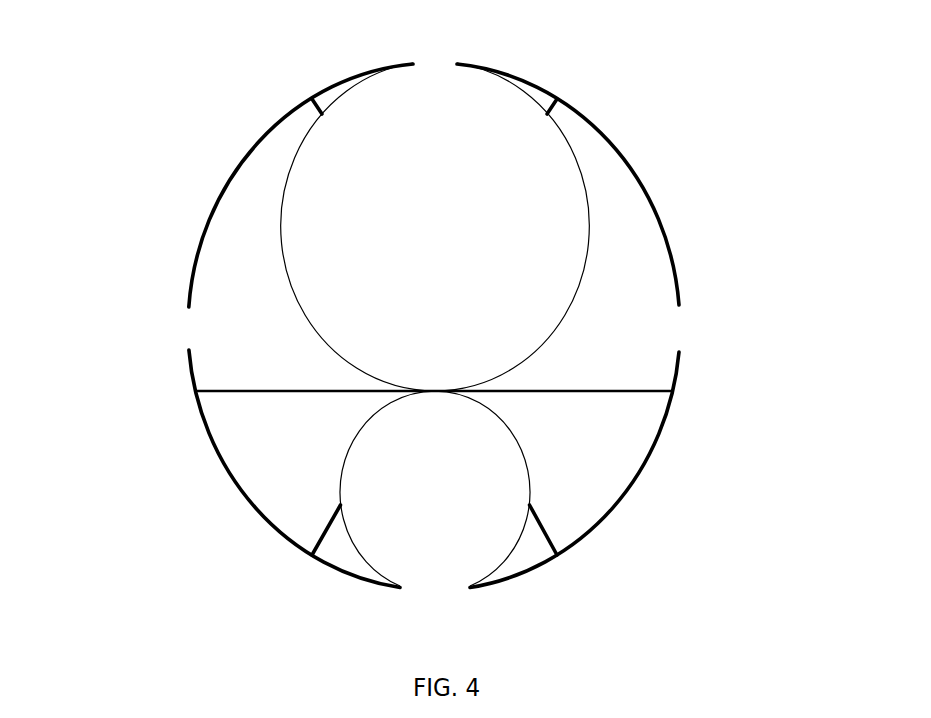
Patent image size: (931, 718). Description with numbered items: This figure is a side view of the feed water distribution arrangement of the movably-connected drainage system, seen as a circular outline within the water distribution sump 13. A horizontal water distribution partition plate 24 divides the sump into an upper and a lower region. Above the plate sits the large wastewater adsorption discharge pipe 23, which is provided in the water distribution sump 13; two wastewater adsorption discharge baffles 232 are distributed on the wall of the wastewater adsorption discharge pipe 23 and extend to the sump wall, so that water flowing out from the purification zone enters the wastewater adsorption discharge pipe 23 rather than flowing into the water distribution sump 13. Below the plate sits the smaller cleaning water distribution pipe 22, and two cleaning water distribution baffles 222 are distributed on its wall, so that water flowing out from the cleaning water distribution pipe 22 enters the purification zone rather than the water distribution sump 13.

The water distribution sump 13 is at (270, 328).
The cleaning water distribution pipe 22 is at (360, 560).
The cleaning water distribution baffles 222 is at (323, 528).
The wastewater adsorption discharge pipe 23 is at (590, 213).
The wastewater adsorption discharge baffles 232 is at (312, 99).
The water distribution partition plate 24 is at (592, 391).